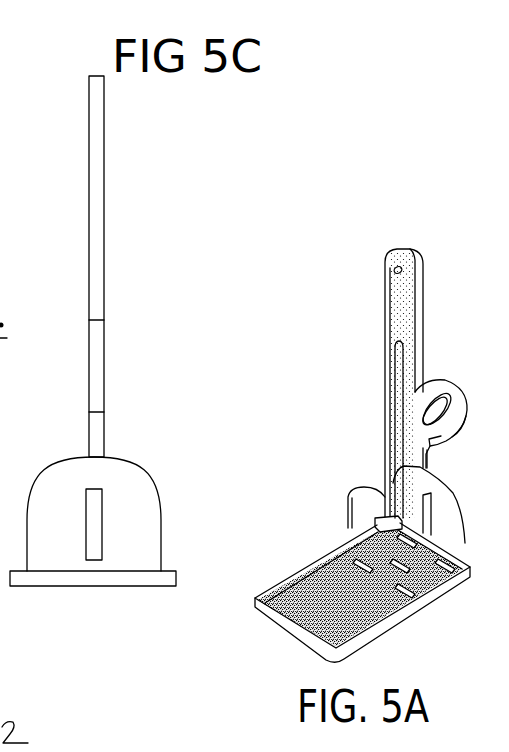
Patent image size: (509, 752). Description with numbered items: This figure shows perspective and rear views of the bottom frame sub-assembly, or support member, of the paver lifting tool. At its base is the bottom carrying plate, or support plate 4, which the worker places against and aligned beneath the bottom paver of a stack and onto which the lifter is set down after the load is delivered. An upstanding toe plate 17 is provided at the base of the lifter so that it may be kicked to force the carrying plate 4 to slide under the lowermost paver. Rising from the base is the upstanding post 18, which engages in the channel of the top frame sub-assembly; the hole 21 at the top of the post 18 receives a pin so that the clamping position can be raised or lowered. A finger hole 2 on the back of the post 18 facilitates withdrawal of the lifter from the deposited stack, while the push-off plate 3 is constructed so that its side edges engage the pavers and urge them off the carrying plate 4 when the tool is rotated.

In FIG. 5C, the finger hole 2 is at (100, 362).
In FIG. 5A, the finger hole 2 is at (460, 391).
In FIG. 5A, the push-off plate 3 is at (349, 503).
In FIG. 5C, the carrying plate 4 is at (77, 581).
In FIG. 5A, the carrying plate 4 is at (286, 630).
In FIG. 5C, the toe plate 17 is at (152, 501).
In FIG. 5A, the toe plate 17 is at (445, 503).
In FIG. 5C, the post 18 is at (100, 210).
In FIG. 5A, the post 18 is at (408, 300).
In FIG. 5A, the hole 21 is at (393, 270).